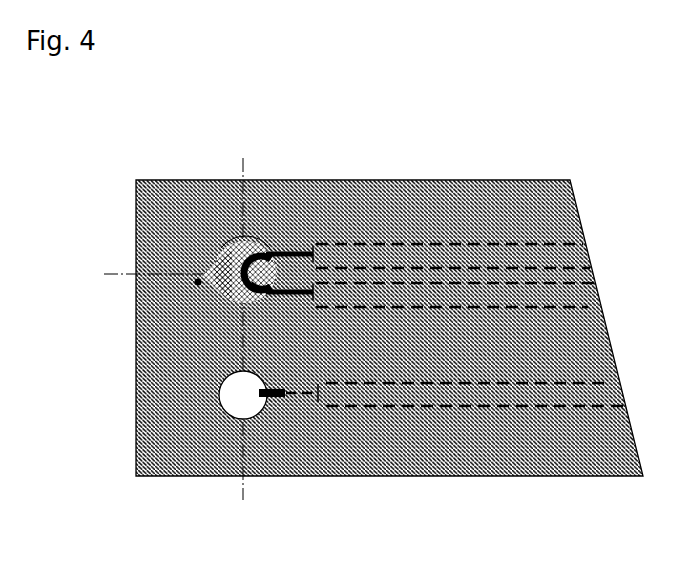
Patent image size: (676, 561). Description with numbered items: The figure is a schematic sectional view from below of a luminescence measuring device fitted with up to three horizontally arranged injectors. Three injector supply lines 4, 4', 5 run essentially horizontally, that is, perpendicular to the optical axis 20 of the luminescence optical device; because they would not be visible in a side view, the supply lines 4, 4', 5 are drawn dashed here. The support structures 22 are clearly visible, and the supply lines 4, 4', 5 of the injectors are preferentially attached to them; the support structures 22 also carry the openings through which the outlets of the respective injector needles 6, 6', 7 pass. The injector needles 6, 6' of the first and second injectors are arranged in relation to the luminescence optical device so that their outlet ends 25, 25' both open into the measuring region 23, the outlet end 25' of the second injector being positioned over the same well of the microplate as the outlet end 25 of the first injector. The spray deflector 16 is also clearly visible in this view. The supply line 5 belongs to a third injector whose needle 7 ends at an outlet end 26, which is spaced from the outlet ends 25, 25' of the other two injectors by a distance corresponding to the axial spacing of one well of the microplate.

The support structure 22 is at (567, 445).
The spray deflector 16 is at (197, 255).
The optical axis 20 is at (212, 240).
The outlet end 25 is at (265, 213).
The outlet end 25' is at (172, 324).
The measuring region 23 is at (187, 276).
The injector needle 6 is at (310, 199).
The injector needle 6' is at (294, 230).
The supply line 4 is at (453, 195).
The supply line 4' is at (458, 230).
The outlet end 26 is at (257, 392).
The injector needle 7 is at (285, 391).
The supply line 5 is at (445, 398).